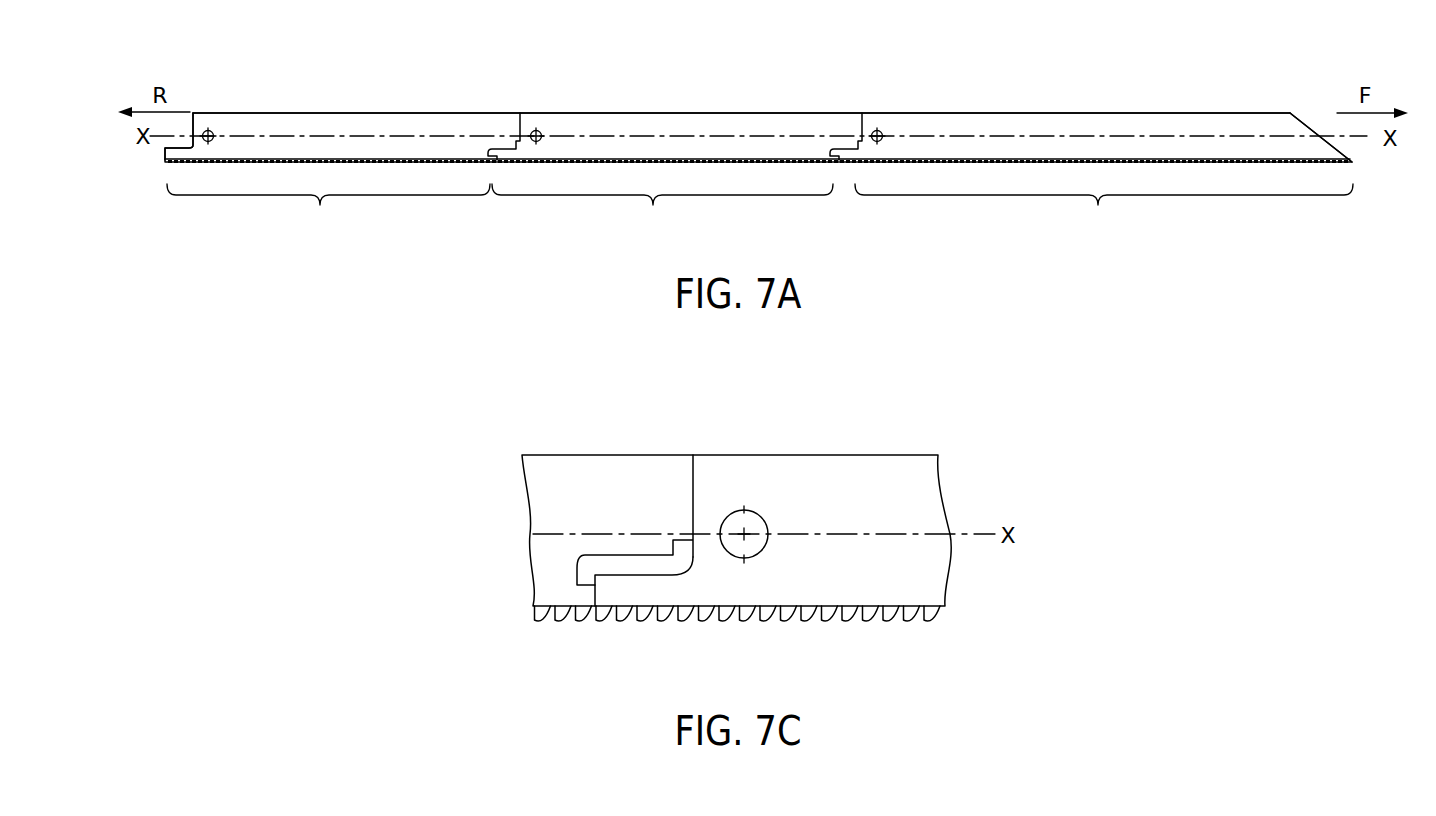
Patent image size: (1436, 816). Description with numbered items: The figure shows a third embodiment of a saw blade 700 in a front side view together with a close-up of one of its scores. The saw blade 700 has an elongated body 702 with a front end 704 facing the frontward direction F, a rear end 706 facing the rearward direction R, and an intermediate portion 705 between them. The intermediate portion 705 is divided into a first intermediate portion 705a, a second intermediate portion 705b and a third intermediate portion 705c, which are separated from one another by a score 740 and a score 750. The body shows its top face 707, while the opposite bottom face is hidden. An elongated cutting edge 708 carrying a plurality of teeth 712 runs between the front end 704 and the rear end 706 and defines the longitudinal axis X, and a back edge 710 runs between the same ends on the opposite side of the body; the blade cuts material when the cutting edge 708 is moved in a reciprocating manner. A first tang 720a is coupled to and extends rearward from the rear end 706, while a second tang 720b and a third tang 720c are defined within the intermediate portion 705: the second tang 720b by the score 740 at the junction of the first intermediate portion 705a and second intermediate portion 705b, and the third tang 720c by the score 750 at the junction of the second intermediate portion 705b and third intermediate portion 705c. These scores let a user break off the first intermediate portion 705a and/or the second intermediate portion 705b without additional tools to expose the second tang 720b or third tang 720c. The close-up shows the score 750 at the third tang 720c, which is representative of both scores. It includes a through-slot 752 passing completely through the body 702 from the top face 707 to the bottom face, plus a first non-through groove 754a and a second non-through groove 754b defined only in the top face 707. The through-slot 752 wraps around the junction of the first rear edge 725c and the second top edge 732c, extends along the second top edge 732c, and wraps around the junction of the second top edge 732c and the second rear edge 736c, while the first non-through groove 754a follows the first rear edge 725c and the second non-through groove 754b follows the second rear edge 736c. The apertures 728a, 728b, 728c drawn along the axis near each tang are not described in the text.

In FIG. 7A, the saw blade 700 is at (968, 68).
In FIG. 7A, the elongated body 702 is at (643, 98).
In FIG. 7C, the elongated body 702 is at (903, 465).
In FIG. 7A, the front end 704 is at (1303, 122).
In FIG. 7A, the intermediate portion 705 is at (593, 98).
In FIG. 7A, the first intermediate portion 705a is at (328, 210).
In FIG. 7A, the second intermediate portion 705b is at (662, 210).
In FIG. 7A, the third intermediate portion 705c is at (1104, 210).
In FIG. 7A, the rear end 706 is at (195, 100).
In FIG. 7A, the top face 707 is at (1043, 125).
In FIG. 7C, the top face 707 is at (883, 585).
In FIG. 7A, the cutting edge 708 is at (997, 165).
In FIG. 7C, the cutting edge 708 is at (738, 613).
In FIG. 7A, the back edge 710 is at (337, 112).
In FIG. 7A, the teeth 712 is at (935, 165).
In FIG. 7A, the first tang 720a is at (175, 183).
In FIG. 7A, the second tang 720b is at (509, 183).
In FIG. 7A, the third tang 720c is at (850, 183).
In FIG. 7C, the third tang 720c is at (596, 648).
In FIG. 7C, the first rear edge 725c is at (693, 480).
In FIG. 7A, the first aperture 728a is at (213, 130).
In FIG. 7A, the second aperture 728b is at (533, 130).
In FIG. 7A, the third aperture 728c is at (874, 132).
In FIG. 7C, the third aperture 728c is at (767, 523).
In FIG. 7C, the second top edge 732c is at (588, 557).
In FIG. 7C, the second rear edge 736c is at (593, 593).
In FIG. 7A, the score 740 is at (520, 123).
In FIG. 7A, the score 750 is at (862, 123).
In FIG. 7C, the score 750 is at (693, 468).
In FIG. 7C, the through-slot 752 is at (635, 567).
In FIG. 7C, the first non-through groove 754a is at (693, 457).
In FIG. 7C, the second non-through groove 754b is at (595, 603).